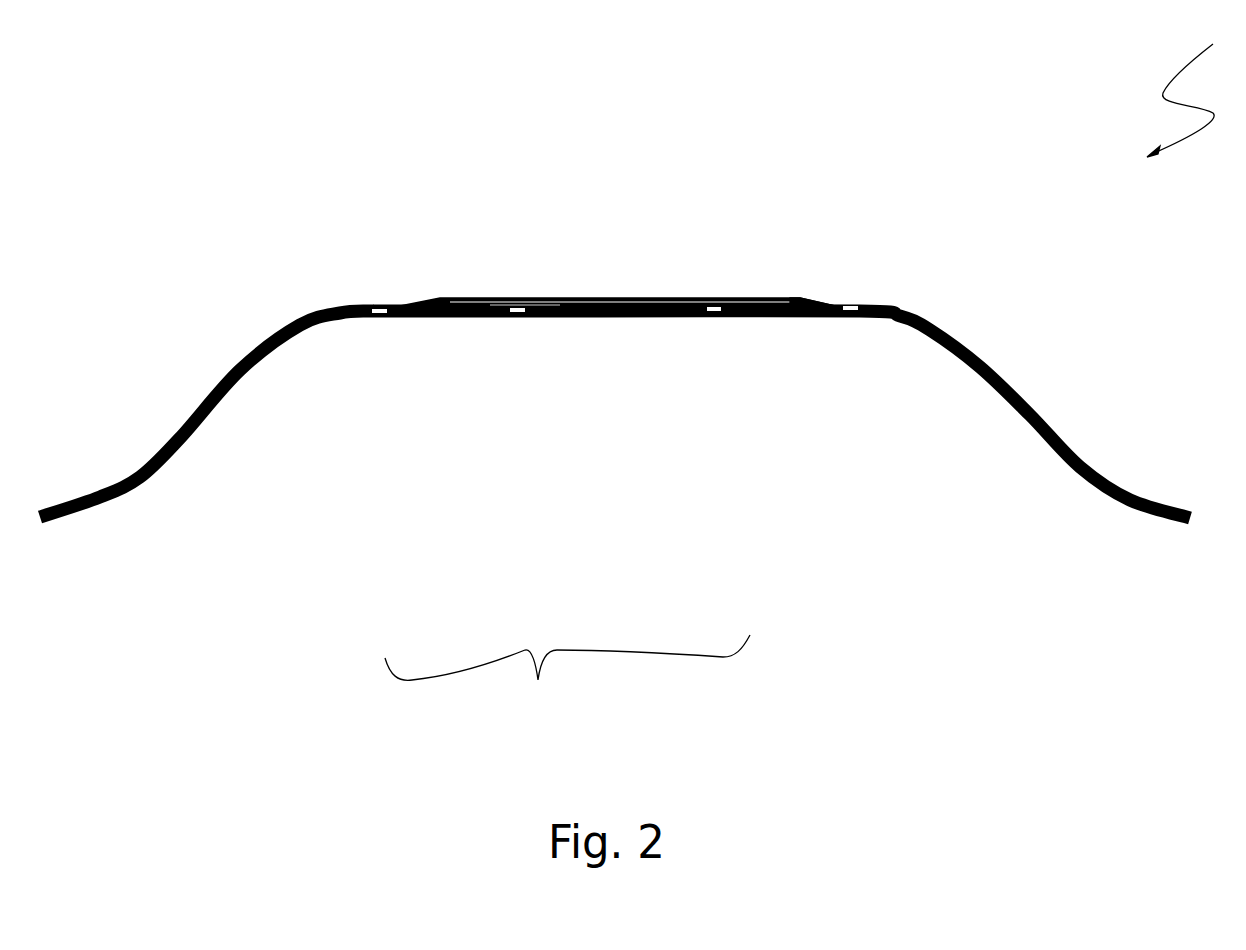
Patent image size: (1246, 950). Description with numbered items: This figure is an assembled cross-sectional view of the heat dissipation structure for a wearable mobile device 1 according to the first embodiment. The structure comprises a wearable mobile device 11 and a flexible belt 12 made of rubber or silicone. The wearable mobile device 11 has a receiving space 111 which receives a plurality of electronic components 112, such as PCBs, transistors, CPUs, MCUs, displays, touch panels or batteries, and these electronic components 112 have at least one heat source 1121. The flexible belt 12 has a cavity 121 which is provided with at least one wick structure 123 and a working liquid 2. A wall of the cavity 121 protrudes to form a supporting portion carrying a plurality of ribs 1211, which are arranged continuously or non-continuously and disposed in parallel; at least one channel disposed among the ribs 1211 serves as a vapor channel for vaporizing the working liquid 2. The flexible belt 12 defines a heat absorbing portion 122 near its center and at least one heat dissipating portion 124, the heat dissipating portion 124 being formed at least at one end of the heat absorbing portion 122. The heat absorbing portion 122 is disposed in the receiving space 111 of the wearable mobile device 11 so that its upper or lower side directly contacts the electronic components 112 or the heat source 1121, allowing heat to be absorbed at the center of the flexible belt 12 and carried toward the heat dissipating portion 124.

The heat dissipation structure for a wearable mobile device 1 is at (1185, 91).
The working liquid 2 is at (236, 364).
The wearable mobile device 11 is at (452, 298).
The receiving space 111 is at (776, 297).
The electronic components 112 is at (490, 296).
The heat source 1121 is at (640, 297).
The ribs 1211 is at (580, 297).
The flexible belt 12 is at (567, 678).
The cavity 121 is at (380, 318).
The heat absorbing portion 122 is at (503, 318).
The wick structure 123 is at (528, 318).
The heat dissipating portion 124 is at (140, 486).